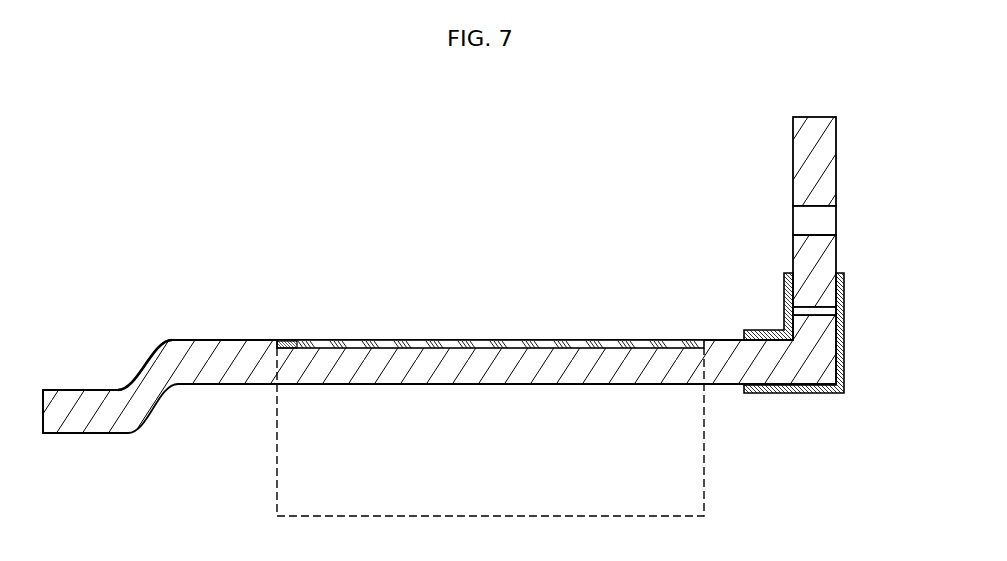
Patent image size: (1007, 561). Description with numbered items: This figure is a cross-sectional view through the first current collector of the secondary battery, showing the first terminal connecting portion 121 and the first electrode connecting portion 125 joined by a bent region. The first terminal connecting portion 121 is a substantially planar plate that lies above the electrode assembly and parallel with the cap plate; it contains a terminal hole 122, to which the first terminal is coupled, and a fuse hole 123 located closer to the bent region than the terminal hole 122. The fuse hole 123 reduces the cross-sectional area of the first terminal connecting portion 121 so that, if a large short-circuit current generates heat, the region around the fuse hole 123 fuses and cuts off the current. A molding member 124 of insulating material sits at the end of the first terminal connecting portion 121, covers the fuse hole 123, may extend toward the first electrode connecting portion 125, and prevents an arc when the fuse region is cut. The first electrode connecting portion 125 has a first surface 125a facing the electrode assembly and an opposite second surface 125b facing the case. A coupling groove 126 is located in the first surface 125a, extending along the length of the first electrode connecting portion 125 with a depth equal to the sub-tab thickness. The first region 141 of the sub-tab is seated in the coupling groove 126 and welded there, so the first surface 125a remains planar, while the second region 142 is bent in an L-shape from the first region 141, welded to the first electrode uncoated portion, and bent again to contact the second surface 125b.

The first terminal connecting portion 121 is at (836, 153).
The terminal hole 122 is at (815, 235).
The fuse hole 123 is at (815, 307).
The molding member 124 is at (845, 362).
The first electrode connecting portion 125 is at (439, 364).
The first surface 125a is at (193, 338).
The second surface 125b is at (208, 384).
The coupling groove 126 is at (315, 340).
The first region 141 is at (445, 345).
The second region 142 is at (705, 471).